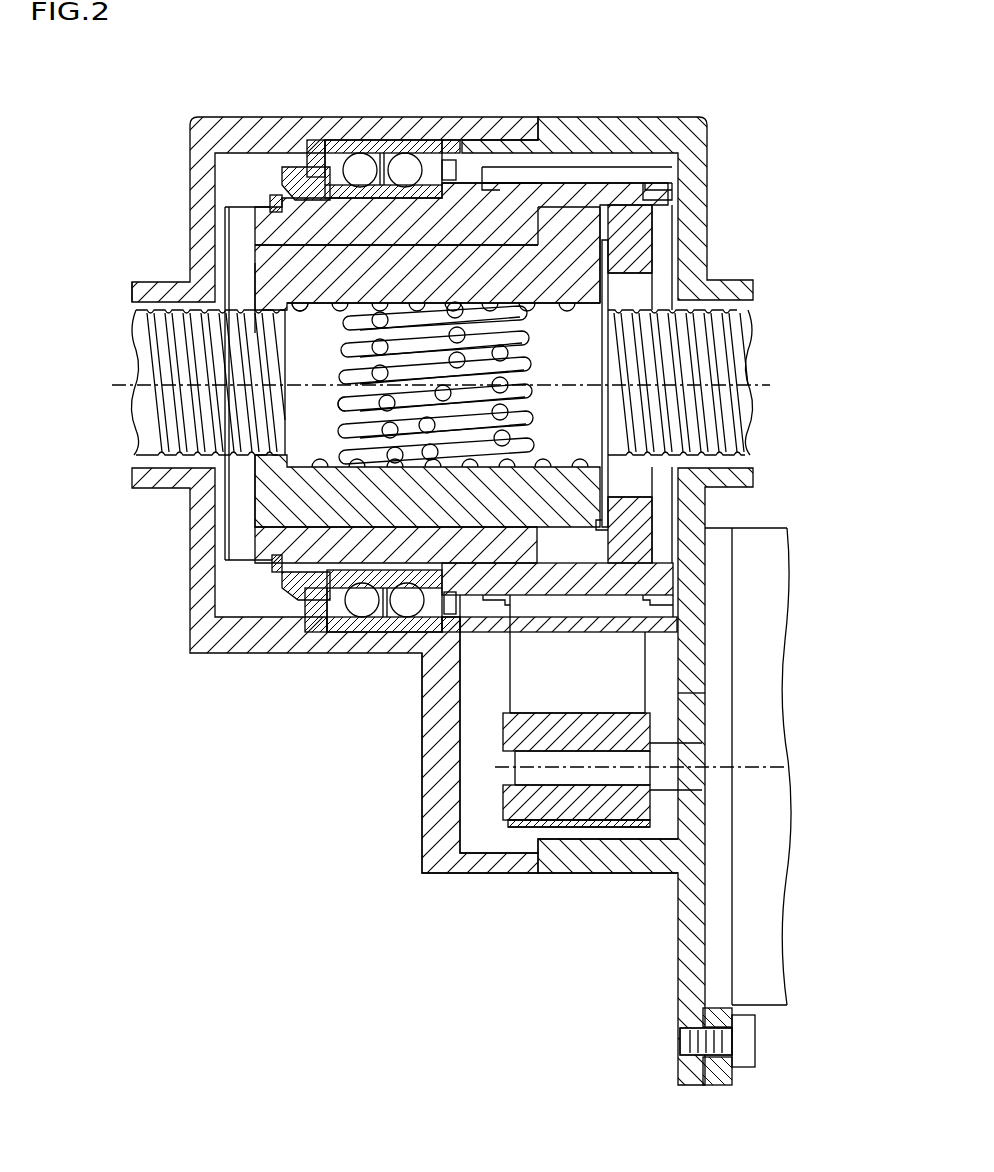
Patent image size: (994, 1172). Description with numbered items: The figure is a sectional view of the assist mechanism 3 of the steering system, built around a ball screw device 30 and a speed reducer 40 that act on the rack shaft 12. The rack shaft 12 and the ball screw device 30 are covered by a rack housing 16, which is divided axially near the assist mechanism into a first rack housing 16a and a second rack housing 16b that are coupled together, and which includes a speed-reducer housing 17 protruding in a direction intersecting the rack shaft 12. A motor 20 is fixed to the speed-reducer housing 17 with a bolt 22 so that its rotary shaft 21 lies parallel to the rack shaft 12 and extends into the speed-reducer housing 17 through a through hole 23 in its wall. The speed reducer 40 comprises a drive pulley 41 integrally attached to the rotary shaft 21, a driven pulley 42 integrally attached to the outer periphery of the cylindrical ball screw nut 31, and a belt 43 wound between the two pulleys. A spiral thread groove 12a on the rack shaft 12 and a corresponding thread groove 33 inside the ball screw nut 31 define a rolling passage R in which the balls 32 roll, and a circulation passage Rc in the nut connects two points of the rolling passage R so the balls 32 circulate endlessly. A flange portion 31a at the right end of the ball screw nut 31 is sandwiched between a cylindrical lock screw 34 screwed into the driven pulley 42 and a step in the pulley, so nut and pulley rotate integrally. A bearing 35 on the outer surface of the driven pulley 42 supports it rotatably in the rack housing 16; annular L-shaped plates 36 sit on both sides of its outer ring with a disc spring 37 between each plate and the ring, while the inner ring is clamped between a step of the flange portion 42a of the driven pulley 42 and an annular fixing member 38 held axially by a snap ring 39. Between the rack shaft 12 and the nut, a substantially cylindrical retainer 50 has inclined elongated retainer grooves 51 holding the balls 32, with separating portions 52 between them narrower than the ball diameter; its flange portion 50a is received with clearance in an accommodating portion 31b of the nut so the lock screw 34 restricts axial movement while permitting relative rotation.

The assist mechanism 3 is at (382, 884).
The rack shaft 12 is at (145, 318).
The thread groove 12a is at (152, 298).
The rack housing 16 is at (442, 552).
The first rack housing 16a is at (515, 117).
The second rack housing 16b is at (535, 62).
The speed-reducer housing 17 is at (436, 838).
The motor 20 is at (779, 1018).
The rotary shaft 21 is at (700, 782).
The bolt 22 is at (742, 1068).
The through hole 23 is at (700, 700).
The ball screw device 30 is at (240, 508).
The ball screw nut 31 is at (255, 533).
The flange portion 31a is at (548, 200).
The accommodating portion 31b is at (600, 272).
The balls 32 is at (428, 303).
The thread groove 33 is at (470, 303).
The lock screw 34 is at (640, 232).
The bearing 35 is at (378, 140).
The plate 36 is at (315, 632).
The disc spring 37 is at (322, 632).
The fixing member 38 is at (300, 632).
The snap ring 39 is at (278, 572).
The speed reducer 40 is at (488, 739).
The drive pulley 41 is at (500, 796).
The driven pulley 42 is at (232, 215).
The flange portion 42a is at (690, 612).
The belt 43 is at (630, 652).
The retainer 50 is at (622, 486).
The flange portion 50a is at (604, 530).
The retainer grooves 51 is at (524, 348).
The separating portion 52 is at (522, 406).
The rolling passage R is at (364, 303).
The circulation passage Rc is at (345, 406).